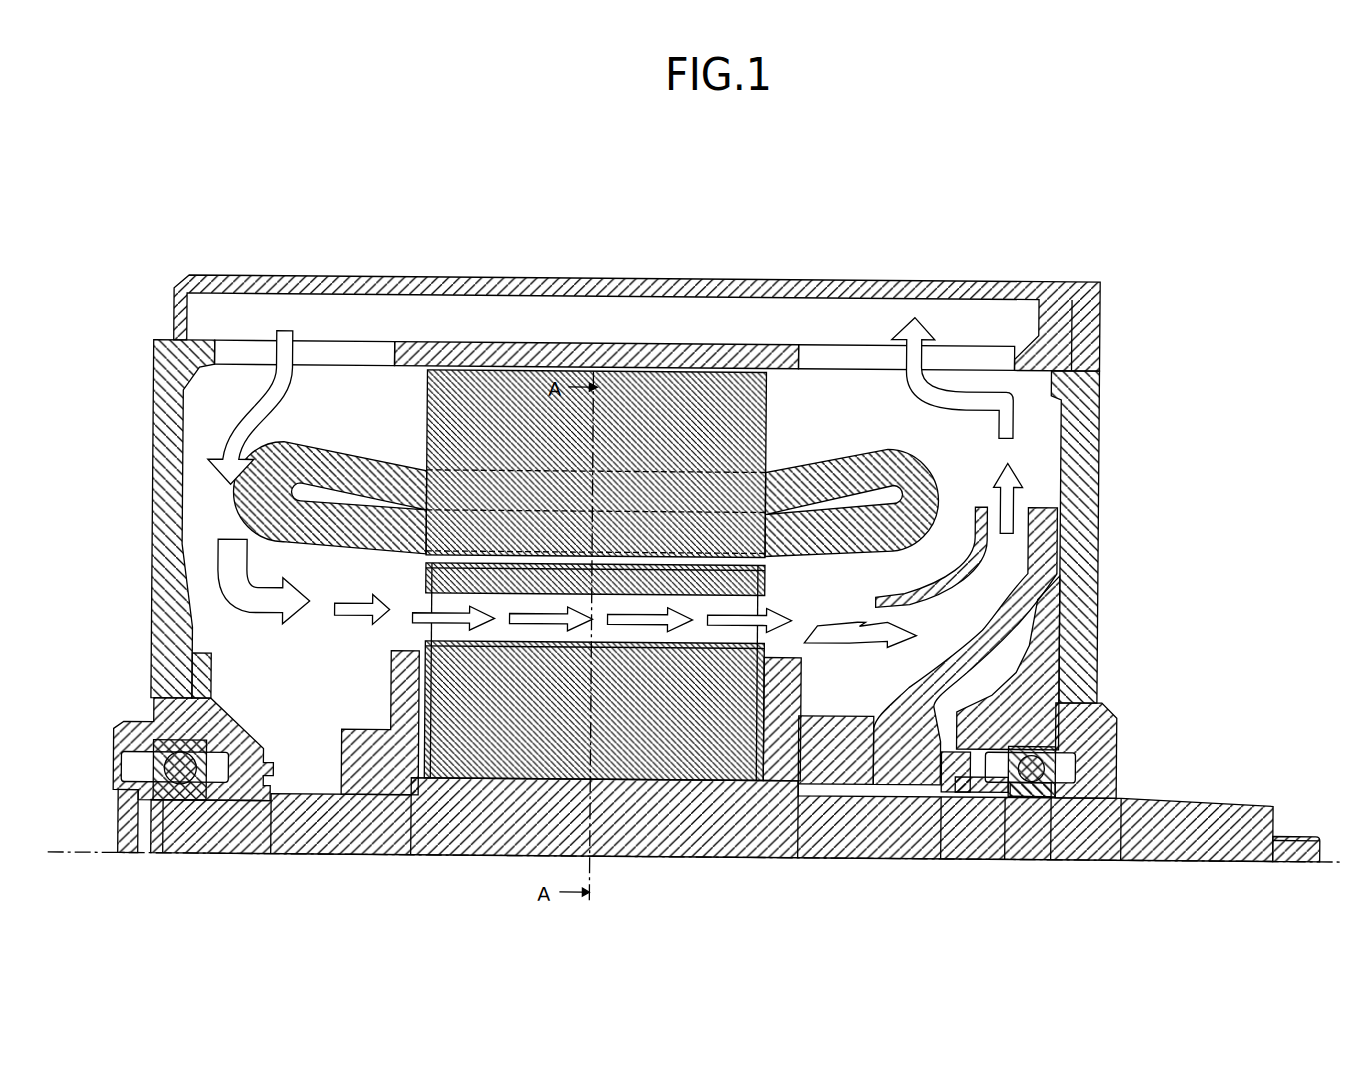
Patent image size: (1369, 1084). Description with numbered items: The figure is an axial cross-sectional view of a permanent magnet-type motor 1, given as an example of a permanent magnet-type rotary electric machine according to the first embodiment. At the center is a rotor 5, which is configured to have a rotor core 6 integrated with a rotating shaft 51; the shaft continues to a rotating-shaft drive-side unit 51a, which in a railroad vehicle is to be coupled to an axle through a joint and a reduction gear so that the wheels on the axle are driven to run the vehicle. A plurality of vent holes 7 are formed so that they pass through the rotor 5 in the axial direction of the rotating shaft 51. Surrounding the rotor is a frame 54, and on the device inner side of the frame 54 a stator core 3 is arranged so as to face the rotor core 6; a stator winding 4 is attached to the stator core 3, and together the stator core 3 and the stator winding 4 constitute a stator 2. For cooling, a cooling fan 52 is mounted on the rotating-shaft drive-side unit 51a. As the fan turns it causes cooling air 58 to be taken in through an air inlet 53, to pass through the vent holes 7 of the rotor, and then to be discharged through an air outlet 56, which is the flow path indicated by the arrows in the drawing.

The permanent magnet-type motor 1 is at (761, 209).
The stator 2 is at (413, 405).
The stator core 3 is at (522, 370).
The stator winding 4 is at (326, 445).
The rotor 5 is at (386, 638).
The rotor core 6 is at (490, 786).
The vent holes 7 is at (698, 634).
The rotating shaft 51 is at (716, 858).
The rotating-shaft drive-side unit 51a is at (1198, 863).
The cooling fan 52 is at (1036, 488).
The air inlet 53 is at (233, 352).
The frame 54 is at (760, 350).
The air outlet 56 is at (963, 352).
The cooling air 58 is at (258, 606).